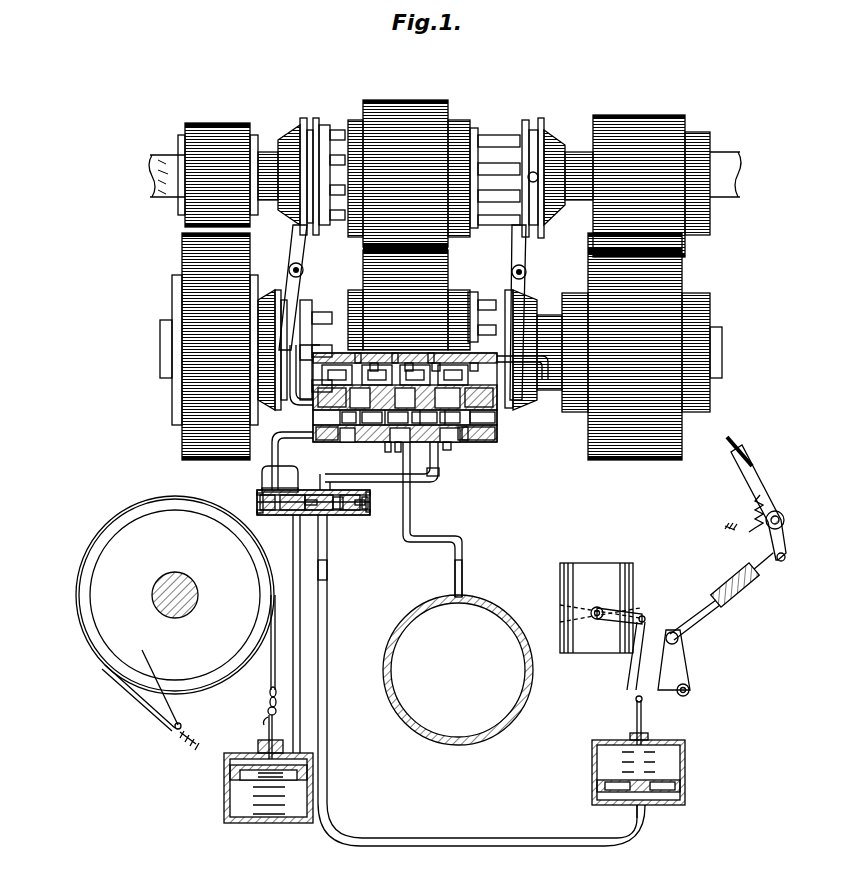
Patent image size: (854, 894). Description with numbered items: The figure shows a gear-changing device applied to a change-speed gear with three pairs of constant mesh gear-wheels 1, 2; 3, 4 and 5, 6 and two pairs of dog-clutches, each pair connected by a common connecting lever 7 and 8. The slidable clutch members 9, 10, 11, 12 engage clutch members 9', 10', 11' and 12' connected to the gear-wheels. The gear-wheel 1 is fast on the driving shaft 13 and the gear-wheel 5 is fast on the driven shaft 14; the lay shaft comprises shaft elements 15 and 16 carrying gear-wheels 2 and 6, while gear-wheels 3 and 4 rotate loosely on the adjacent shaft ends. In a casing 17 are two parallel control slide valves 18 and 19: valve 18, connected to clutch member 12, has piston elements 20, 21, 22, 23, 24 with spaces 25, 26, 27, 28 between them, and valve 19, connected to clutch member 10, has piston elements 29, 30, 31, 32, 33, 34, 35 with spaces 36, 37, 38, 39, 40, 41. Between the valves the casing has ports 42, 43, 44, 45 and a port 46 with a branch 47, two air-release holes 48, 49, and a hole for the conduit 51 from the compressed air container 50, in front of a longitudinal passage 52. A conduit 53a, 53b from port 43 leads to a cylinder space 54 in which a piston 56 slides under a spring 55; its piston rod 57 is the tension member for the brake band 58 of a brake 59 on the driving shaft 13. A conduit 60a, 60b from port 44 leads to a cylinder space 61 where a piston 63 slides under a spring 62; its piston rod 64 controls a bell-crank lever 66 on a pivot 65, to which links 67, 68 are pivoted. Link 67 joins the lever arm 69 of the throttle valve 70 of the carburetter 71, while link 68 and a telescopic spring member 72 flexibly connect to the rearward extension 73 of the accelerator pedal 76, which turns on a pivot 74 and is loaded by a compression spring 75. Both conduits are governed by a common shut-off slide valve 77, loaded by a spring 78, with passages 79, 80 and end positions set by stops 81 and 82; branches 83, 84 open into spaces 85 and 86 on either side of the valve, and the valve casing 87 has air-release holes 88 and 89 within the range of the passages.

The gear-wheel 1 is at (205, 150).
The gear-wheel 2 is at (182, 290).
The gear-wheel 3 is at (405, 120).
The gear-wheel 4 is at (440, 275).
The gear-wheel 5 is at (628, 145).
The gear-wheel 6 is at (660, 265).
The connecting lever 7 is at (303, 248).
The connecting lever 8 is at (527, 262).
The slidable clutch member 9 is at (295, 155).
The clutch member 9' is at (329, 155).
The slidable clutch member 10 is at (272, 328).
The clutch member 10' is at (321, 334).
The slidable clutch member 11 is at (557, 157).
The clutch member 11' is at (495, 152).
The slidable clutch member 12 is at (536, 340).
The clutch member 12' is at (481, 306).
The driving shaft 13 is at (170, 183).
The driven shaft 14 is at (728, 198).
The shaft element 15 is at (162, 350).
The shaft element 16 is at (716, 375).
The casing 17 is at (514, 402).
The control slide valve 18 is at (549, 352).
The control slide valve 19 is at (300, 436).
The piston element 20 is at (318, 353).
The piston element 21 is at (358, 353).
The piston element 22 is at (395, 353).
The piston element 23 is at (431, 353).
The piston element 24 is at (498, 357).
The space 25 is at (337, 374).
The space 26 is at (377, 374).
The space 27 is at (415, 374).
The space 28 is at (453, 374).
The piston element 29 is at (323, 443).
The piston element 30 is at (349, 424).
The piston element 31 is at (397, 424).
The piston element 32 is at (422, 424).
The piston element 33 is at (448, 424).
The piston element 34 is at (485, 438).
The piston element 35 is at (495, 417).
The space 36 is at (293, 400).
The space 37 is at (397, 452).
The space 38 is at (388, 452).
The space 39 is at (439, 472).
The space 40 is at (455, 446).
The space 41 is at (480, 432).
The port 42 is at (332, 397).
The port 43 is at (374, 363).
The port 44 is at (474, 363).
The port 45 is at (479, 397).
The port 46 is at (436, 363).
The branch 47 is at (409, 363).
The air-release hole 48 is at (372, 424).
The air-release hole 49 is at (465, 438).
The compressed air container 50 is at (405, 612).
The conduit 51 is at (463, 568).
The longitudinal passage 52 is at (408, 470).
The conduit section 53a is at (335, 516).
The conduit section 53b is at (328, 686).
The cylinder space 54 is at (288, 745).
The spring 55 is at (255, 795).
The piston 56 is at (230, 767).
The piston rod 57 is at (268, 720).
The brake band 58 is at (271, 690).
The brake 59 is at (140, 652).
The conduit section 60a is at (436, 478).
The conduit section 60b is at (327, 572).
The cylinder space 61 is at (665, 810).
The spring 62 is at (650, 770).
The piston 63 is at (680, 790).
The piston rod 64 is at (636, 713).
The pivot 65 is at (690, 690).
The bell-crank lever 66 is at (682, 645).
The link 67 is at (640, 640).
The link 68 is at (700, 620).
The lever arm 69 is at (643, 612).
The throttle valve 70 is at (590, 610).
The carburetter 71 is at (590, 580).
The telescopic spring member 72 is at (735, 580).
The rearward extension 73 is at (172, 588).
The pivot 74 is at (784, 515).
The compression spring 75 is at (730, 523).
The accelerator pedal 76 is at (733, 452).
The shut-off slide valve 77 is at (310, 512).
The spring 78 is at (258, 492).
The passage 79 is at (292, 511).
The passage 80 is at (338, 512).
The stop 81 is at (258, 494).
The stop 82 is at (360, 512).
The branch conduit 83 is at (262, 473).
The branch conduit 84 is at (366, 512).
The space 85 is at (260, 500).
The space 86 is at (369, 514).
The valve casing 87 is at (318, 512).
The air-release hole 88 is at (280, 478).
The air-release hole 89 is at (316, 479).